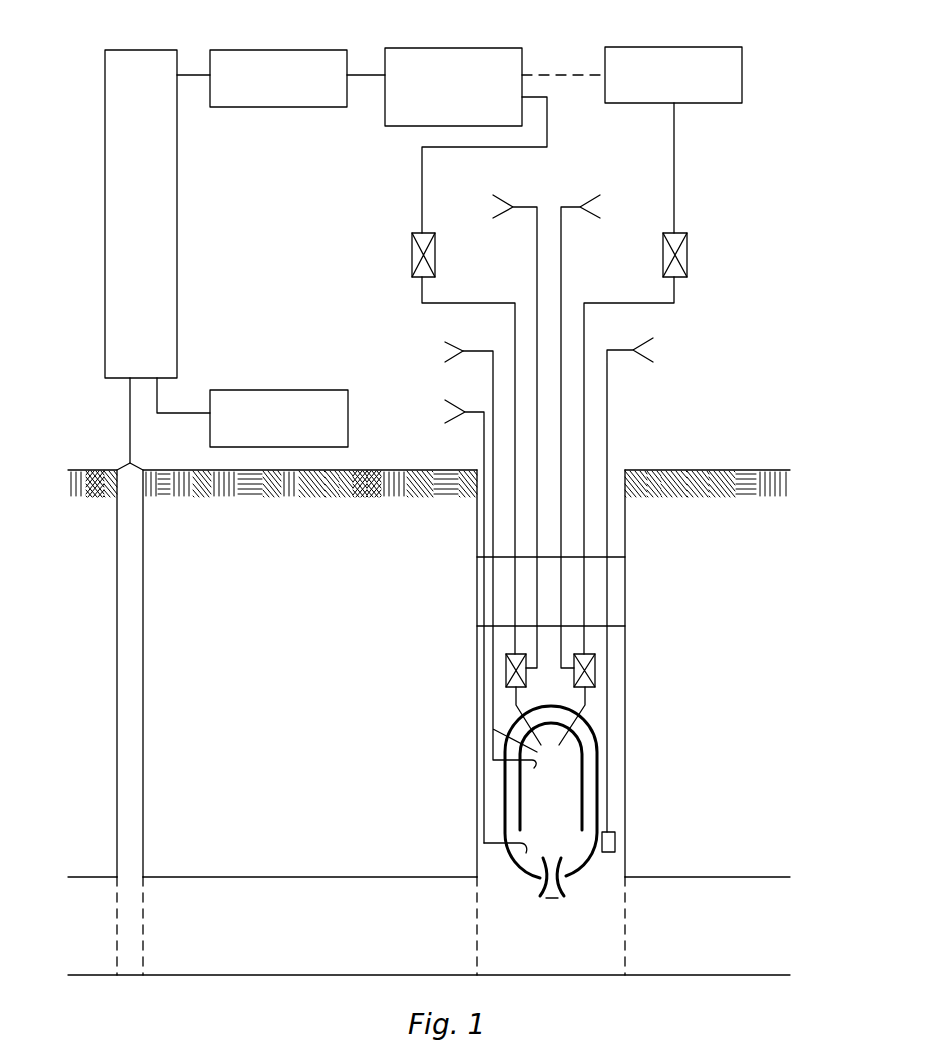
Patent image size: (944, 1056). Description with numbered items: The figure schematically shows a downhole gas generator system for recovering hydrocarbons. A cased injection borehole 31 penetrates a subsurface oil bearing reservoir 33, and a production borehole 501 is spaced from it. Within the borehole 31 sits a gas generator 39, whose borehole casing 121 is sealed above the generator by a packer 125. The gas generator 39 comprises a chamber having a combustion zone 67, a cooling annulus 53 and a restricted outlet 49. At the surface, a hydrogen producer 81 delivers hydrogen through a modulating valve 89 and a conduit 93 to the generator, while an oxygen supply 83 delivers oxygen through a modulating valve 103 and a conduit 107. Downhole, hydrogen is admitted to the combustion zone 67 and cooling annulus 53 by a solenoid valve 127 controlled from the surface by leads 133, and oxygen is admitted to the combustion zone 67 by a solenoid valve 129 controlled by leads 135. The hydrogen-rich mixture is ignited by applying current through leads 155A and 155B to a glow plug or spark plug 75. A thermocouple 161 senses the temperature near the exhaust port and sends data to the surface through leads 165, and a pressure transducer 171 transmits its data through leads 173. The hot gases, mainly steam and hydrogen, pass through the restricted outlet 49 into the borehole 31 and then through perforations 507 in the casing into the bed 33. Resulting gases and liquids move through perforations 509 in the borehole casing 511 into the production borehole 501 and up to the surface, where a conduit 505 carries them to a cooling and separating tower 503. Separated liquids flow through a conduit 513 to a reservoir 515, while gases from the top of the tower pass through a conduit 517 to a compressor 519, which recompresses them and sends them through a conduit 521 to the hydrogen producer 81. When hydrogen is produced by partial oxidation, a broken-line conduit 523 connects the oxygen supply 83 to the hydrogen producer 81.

The cased injection borehole 31 is at (625, 525).
The subsurface oil bearing reservoir 33 is at (429, 722).
The gas generator 39 is at (577, 875).
The restricted outlet 49 is at (553, 893).
The cooling annulus 53 is at (513, 783).
The combustion zone 67 is at (555, 797).
The glow plug or spark plug 75 is at (539, 760).
The hydrogen producer 81 is at (455, 48).
The oxygen supply 83 is at (672, 47).
The modulating valve 89 is at (412, 250).
The conduit 93 is at (475, 303).
The modulating valve 103 is at (687, 250).
The conduit 107 is at (677, 303).
The borehole casing 121 is at (625, 943).
The packer 125 is at (573, 596).
The solenoid valve 127 is at (506, 672).
The solenoid valve 129 is at (595, 668).
The leads 133 is at (537, 242).
The leads 135 is at (562, 242).
The lead 155A is at (445, 342).
The lead 155B is at (445, 362).
The thermocouple 161 is at (520, 855).
The leads 165 is at (484, 525).
The pressure transducer 171 is at (615, 840).
The leads 173 is at (607, 400).
The production borehole 501 is at (146, 668).
The cooling and separating tower 503 is at (177, 200).
The conduit 505 is at (130, 418).
The perforations 507 is at (478, 925).
The perforations 509 is at (120, 925).
The borehole casing 511 is at (146, 920).
The conduit 513 is at (180, 413).
The reservoir 515 is at (290, 390).
The conduit 517 is at (190, 72).
The compressor 519 is at (270, 50).
The conduit 521 is at (370, 72).
The conduit 523 is at (555, 72).